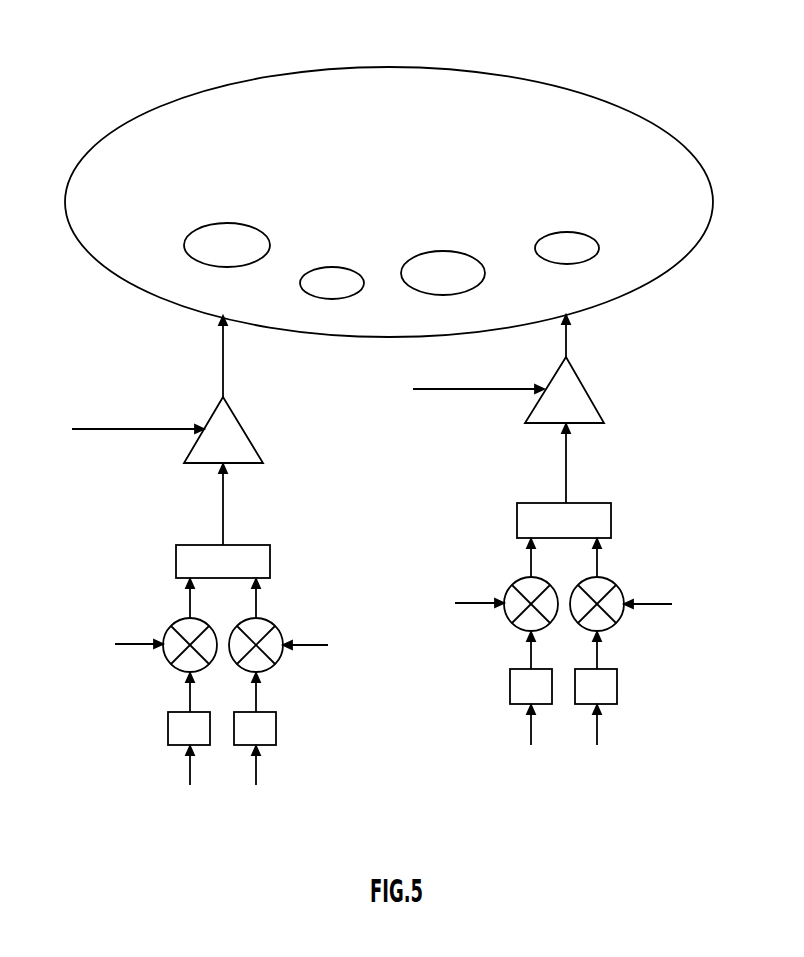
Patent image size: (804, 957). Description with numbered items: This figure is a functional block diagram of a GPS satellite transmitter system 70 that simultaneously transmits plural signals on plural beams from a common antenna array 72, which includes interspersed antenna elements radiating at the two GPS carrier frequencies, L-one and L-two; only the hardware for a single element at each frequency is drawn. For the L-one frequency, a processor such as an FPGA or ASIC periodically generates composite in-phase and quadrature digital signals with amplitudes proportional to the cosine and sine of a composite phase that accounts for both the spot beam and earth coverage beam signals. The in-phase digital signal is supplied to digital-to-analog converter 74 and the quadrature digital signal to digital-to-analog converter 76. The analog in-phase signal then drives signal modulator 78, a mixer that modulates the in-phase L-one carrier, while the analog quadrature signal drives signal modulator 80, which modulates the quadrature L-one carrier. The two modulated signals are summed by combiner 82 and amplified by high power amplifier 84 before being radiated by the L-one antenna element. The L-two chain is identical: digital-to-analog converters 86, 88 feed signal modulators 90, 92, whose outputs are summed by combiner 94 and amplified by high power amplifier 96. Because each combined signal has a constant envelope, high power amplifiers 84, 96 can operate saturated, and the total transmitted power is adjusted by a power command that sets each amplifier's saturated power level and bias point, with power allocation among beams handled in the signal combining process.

The transmitter system 70 is at (568, 62).
The antenna 72 is at (638, 120).
The digital-to-analog converter 74 is at (510, 682).
The digital-to-analog converter 76 is at (617, 690).
The signal modulator 78 is at (518, 580).
The signal modulator 80 is at (610, 580).
The combiner 82 is at (595, 503).
The high power amplifier 84 is at (593, 423).
The digital-to-analog converter 86 is at (168, 734).
The digital-to-analog converter 88 is at (276, 731).
The signal modulator 90 is at (178, 621).
The signal modulator 92 is at (266, 620).
The combiner 94 is at (257, 545).
The high power amplifier 96 is at (240, 418).